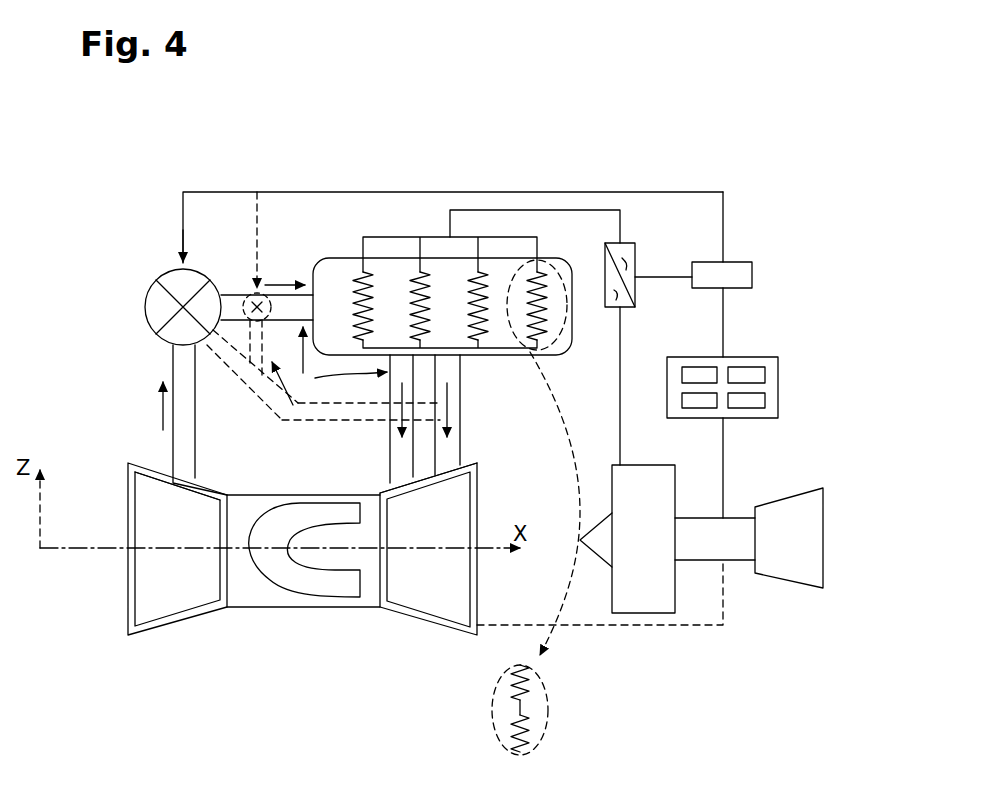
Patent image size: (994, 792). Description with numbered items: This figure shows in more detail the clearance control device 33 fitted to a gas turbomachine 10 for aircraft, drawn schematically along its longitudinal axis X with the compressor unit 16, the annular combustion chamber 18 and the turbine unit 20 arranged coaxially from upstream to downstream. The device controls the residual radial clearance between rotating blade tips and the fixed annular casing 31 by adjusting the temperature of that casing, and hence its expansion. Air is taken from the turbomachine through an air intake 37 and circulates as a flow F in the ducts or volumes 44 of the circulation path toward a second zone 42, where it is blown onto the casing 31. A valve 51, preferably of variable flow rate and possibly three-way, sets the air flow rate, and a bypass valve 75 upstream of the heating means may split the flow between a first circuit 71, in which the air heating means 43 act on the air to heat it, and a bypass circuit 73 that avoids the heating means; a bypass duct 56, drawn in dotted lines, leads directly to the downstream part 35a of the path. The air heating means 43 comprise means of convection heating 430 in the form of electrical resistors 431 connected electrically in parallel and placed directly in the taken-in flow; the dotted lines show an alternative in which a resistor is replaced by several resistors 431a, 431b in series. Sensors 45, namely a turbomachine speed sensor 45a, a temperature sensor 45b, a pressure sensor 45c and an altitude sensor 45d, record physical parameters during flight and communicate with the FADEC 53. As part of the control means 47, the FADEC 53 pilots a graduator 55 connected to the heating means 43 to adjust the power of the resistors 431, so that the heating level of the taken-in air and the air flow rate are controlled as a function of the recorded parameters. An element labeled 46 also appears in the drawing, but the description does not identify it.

The gas turbomachine 10 is at (742, 575).
The compressor unit 16 is at (118, 570).
The annular combustion chamber 18 is at (328, 560).
The turbine unit 20 is at (443, 623).
The fixed annular casing 31 is at (412, 612).
The clearance control device 33 is at (262, 182).
The downstream part of the air flow path 35a is at (450, 415).
The air intake 37 is at (180, 482).
The second zone 42 is at (455, 490).
The air heating means 43 is at (580, 265).
The ducts or volumes 44 is at (232, 292).
The sensors 45 is at (750, 352).
The turbomachine speed sensor 45a is at (705, 372).
The temperature sensor 45b is at (705, 400).
The pressure sensor 45c is at (755, 372).
The altitude sensor 45d is at (755, 398).
The engine 46 is at (803, 522).
The control means 47 is at (645, 248).
The valve 51 is at (145, 295).
The FADEC 53 is at (735, 272).
The graduator 55 is at (630, 248).
The bypass duct 56 is at (332, 262).
The first circuit 71 is at (303, 373).
The bypass circuit 73 is at (385, 433).
The bypass valve 75 is at (255, 288).
The means of convection heating 430 is at (500, 328).
The electrical resistors 431 is at (362, 272).
The series electrical resistor 431a is at (523, 702).
The series electrical resistor 431b is at (530, 733).